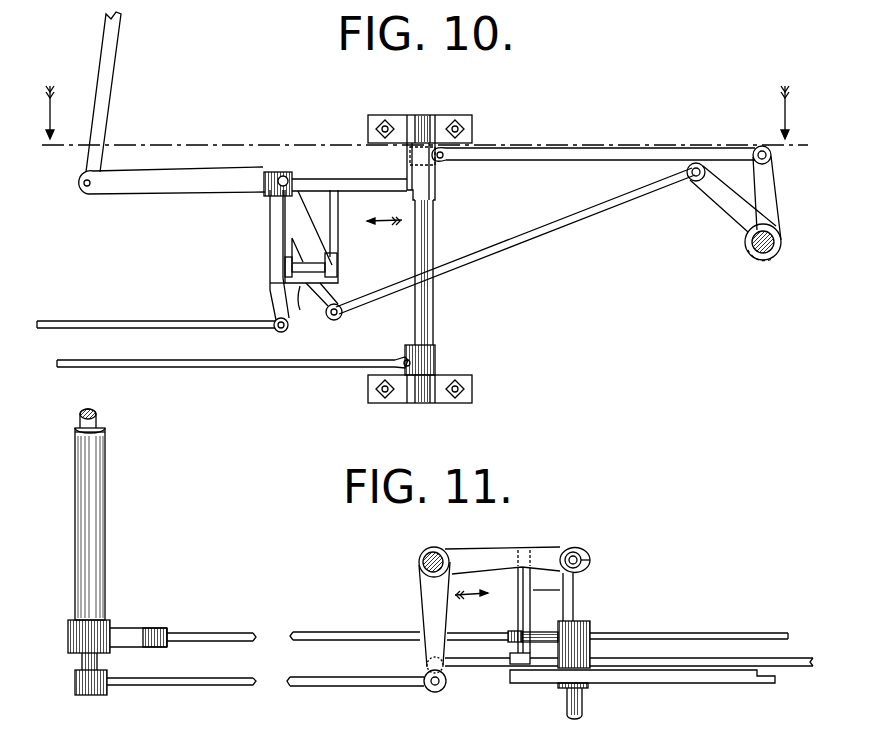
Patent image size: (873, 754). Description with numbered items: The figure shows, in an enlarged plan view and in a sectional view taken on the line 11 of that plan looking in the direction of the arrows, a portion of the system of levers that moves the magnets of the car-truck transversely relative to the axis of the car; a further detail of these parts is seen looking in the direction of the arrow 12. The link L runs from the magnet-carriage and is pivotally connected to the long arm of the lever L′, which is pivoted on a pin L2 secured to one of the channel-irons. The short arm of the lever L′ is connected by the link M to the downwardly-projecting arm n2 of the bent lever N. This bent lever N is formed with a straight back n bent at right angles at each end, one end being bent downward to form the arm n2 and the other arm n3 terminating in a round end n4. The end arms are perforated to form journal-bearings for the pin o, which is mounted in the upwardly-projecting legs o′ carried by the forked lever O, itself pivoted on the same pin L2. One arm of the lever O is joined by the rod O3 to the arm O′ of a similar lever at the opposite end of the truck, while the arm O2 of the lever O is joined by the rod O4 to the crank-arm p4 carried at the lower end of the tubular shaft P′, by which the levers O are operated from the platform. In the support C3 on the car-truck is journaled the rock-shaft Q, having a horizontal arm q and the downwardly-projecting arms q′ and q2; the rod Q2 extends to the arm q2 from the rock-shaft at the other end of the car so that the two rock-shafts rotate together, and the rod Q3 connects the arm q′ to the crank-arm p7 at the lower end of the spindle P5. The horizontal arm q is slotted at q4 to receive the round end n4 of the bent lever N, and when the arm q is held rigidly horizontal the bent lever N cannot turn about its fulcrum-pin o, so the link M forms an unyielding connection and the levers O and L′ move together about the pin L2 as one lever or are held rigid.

In FIG. 10, the section line 11 is at (422, 120).
In FIG. 10, the arrow 12 is at (389, 232).
In FIG. 11, the arrow 12 is at (471, 585).
In FIG. 10, the link L is at (112, 63).
In FIG. 10, the lever L′ is at (195, 193).
In FIG. 11, the lever L′ is at (676, 678).
In FIG. 10, the pin L2 is at (272, 176).
In FIG. 11, the pin L2 is at (583, 702).
In FIG. 10, the round end n4 is at (284, 175).
In FIG. 11, the round end n4 is at (577, 554).
In FIG. 10, the arm n3 is at (282, 227).
In FIG. 11, the downwardly-projecting arm n2 is at (520, 615).
In FIG. 10, the straight back n is at (301, 289).
In FIG. 11, the straight back n is at (556, 543).
In FIG. 10, the bent lever N is at (270, 283).
In FIG. 11, the bent lever N is at (552, 548).
In FIG. 10, the link M is at (336, 228).
In FIG. 11, the link M is at (513, 661).
In FIG. 10, the forked lever O is at (295, 222).
In FIG. 11, the forked lever O is at (589, 634).
In FIG. 10, the arm O′ is at (282, 311).
In FIG. 10, the arm O2 is at (345, 300).
In FIG. 10, the rod O3 is at (120, 329).
In FIG. 10, the rod O4 is at (578, 220).
In FIG. 11, the rod O4 is at (300, 631).
In FIG. 10, the pin o is at (307, 300).
In FIG. 10, the upwardly-projecting legs o′ is at (285, 263).
In FIG. 11, the upwardly-projecting legs o′ is at (533, 590).
In FIG. 10, the rock-shaft Q is at (433, 302).
In FIG. 11, the rock-shaft Q is at (433, 549).
In FIG. 10, the rod Q2 is at (177, 368).
In FIG. 11, the rod Q2 is at (797, 665).
In FIG. 10, the rod Q3 is at (557, 157).
In FIG. 11, the rod Q3 is at (242, 688).
In FIG. 10, the horizontal arm q is at (377, 156).
In FIG. 11, the horizontal arm q is at (510, 540).
In FIG. 10, the downwardly-projecting arm q′ is at (440, 165).
In FIG. 11, the downwardly-projecting arm q′ is at (432, 600).
In FIG. 10, the downwardly-projecting arm q2 is at (437, 350).
In FIG. 11, the downwardly-projecting arm q2 is at (427, 656).
In FIG. 11, the slot q4 is at (593, 560).
In FIG. 10, the support C3 is at (418, 121).
In FIG. 10, the tubular shaft P′ is at (745, 248).
In FIG. 11, the tubular shaft P′ is at (97, 505).
In FIG. 10, the spindle P5 is at (772, 254).
In FIG. 11, the spindle P5 is at (98, 415).
In FIG. 10, the crank-arm p4 is at (710, 203).
In FIG. 11, the crank-arm p4 is at (125, 630).
In FIG. 10, the crank-arm p7 is at (765, 187).
In FIG. 11, the crank-arm p7 is at (98, 694).